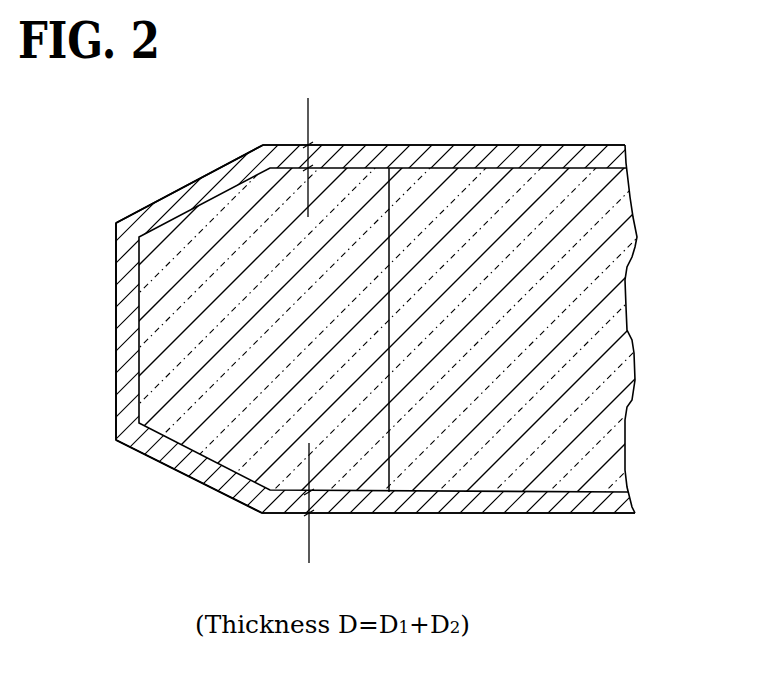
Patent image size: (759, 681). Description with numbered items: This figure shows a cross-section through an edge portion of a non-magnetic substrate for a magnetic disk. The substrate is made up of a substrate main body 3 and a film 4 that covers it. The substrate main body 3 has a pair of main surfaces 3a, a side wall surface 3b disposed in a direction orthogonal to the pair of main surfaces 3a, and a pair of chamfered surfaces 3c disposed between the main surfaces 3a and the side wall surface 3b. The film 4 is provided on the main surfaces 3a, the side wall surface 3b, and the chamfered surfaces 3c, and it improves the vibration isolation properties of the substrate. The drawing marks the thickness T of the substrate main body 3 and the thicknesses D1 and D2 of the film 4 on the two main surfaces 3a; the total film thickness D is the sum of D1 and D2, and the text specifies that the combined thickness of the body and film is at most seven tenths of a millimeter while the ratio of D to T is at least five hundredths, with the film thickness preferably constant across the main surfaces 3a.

The substrate main body 3 is at (597, 345).
The main surfaces 3a is at (430, 147).
The side wall surface 3b is at (116, 303).
The chamfered surfaces 3c is at (208, 195).
The film 4 is at (475, 147).
The thickness of the film on one main surface D1 is at (322, 145).
The thickness of the film on the other main surface D2 is at (322, 490).
The thickness of the substrate main body T is at (404, 330).